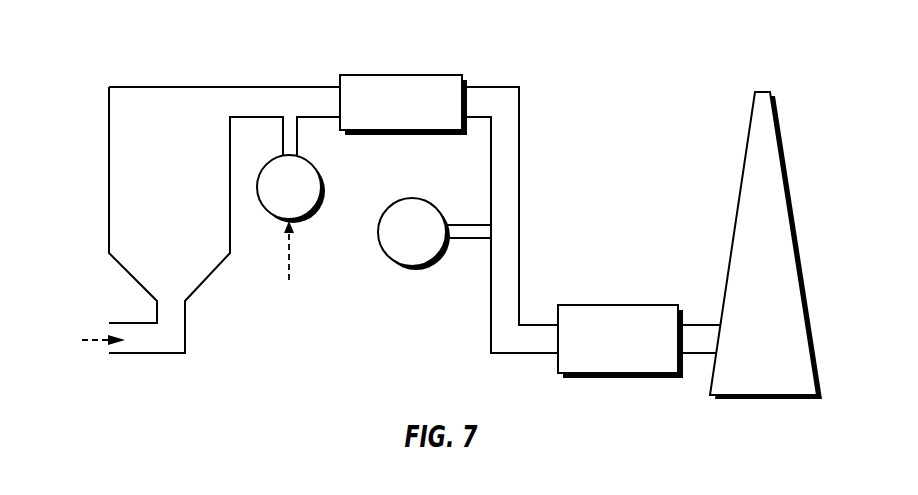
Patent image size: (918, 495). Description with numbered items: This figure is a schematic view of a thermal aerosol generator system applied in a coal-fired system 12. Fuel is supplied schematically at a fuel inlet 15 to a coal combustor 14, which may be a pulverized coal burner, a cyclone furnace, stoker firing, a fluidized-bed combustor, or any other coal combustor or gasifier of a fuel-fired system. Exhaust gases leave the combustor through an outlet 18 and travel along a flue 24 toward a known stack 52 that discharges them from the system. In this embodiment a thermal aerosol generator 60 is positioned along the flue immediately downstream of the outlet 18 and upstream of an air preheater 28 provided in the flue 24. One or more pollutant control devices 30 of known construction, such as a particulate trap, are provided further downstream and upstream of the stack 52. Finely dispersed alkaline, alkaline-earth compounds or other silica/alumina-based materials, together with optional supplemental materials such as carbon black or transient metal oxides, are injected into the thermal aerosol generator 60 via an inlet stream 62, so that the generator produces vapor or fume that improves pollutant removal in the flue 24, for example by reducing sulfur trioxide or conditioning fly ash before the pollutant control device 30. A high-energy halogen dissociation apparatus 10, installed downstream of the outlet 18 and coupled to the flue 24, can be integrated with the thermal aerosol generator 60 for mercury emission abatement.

The high-energy halogen dissociation apparatus 10 is at (398, 247).
The coal-fired system 12 is at (100, 126).
The coal combustor 14 is at (152, 203).
The fuel inlet 15 is at (124, 331).
The outlet 18 is at (231, 95).
The flue 24 is at (510, 267).
The air preheater 28 is at (386, 118).
The pollutant control device 30 is at (604, 357).
The stack 52 is at (748, 357).
The thermal aerosol generator 60 is at (275, 201).
The inlet stream 62 is at (287, 262).